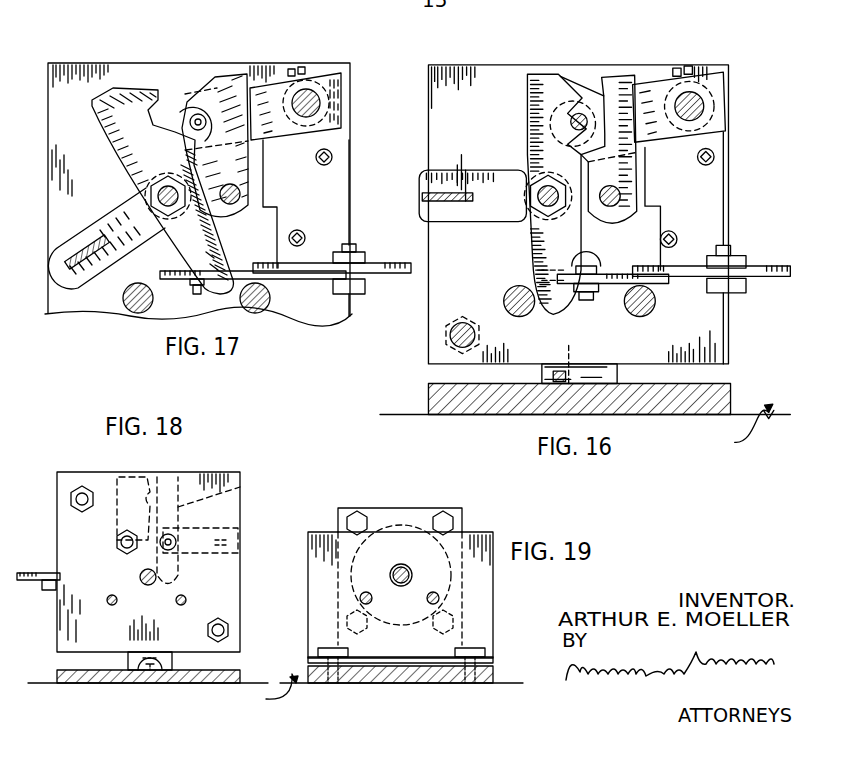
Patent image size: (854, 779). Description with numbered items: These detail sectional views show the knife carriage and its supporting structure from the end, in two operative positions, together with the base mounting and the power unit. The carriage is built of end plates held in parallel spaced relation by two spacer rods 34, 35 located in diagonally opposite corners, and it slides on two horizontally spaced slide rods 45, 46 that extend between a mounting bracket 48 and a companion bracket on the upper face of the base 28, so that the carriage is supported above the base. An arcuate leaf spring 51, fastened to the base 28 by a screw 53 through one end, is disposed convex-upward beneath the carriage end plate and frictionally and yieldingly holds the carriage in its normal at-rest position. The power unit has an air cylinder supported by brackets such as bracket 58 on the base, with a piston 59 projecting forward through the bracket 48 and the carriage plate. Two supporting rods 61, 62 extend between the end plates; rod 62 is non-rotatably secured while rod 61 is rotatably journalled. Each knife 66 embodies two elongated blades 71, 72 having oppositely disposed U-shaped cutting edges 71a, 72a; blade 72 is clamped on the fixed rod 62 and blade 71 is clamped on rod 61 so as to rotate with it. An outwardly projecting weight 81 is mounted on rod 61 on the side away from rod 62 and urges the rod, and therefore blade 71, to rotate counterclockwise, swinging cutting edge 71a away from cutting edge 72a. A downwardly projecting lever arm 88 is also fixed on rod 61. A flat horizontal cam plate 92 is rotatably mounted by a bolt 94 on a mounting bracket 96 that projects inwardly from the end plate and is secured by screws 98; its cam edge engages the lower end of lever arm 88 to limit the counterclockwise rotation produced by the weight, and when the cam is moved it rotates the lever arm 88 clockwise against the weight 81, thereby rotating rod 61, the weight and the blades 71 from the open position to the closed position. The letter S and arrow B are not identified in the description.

In FIG. 17, the blade 71 is at (125, 88).
In FIG. 16, the blade 71 is at (537, 70).
In FIG. 18, the blade 71 is at (212, 530).
In FIG. 17, the cutting edge 71a is at (170, 108).
In FIG. 17, the blade 72 is at (216, 88).
In FIG. 16, the blade 72 is at (583, 80).
In FIG. 18, the blade 72 is at (118, 487).
In FIG. 17, the cutting edge 72a is at (185, 105).
In FIG. 16, the cutting edge 72a is at (572, 123).
In FIG. 17, the knife 66 is at (241, 74).
In FIG. 16, the knife 66 is at (606, 70).
In FIG. 18, the knife 66 is at (182, 492).
In FIG. 17, the switch S is at (277, 85).
In FIG. 16, the switch S is at (636, 80).
In FIG. 17, the spacer rod 34 is at (320, 101).
In FIG. 16, the spacer rod 34 is at (695, 100).
In FIG. 18, the spacer rod 34 is at (70, 500).
In FIG. 17, the screw 98 is at (332, 153).
In FIG. 16, the screw 98 is at (704, 150).
In FIG. 17, the weight 81 is at (66, 242).
In FIG. 16, the weight 81 is at (418, 171).
In FIG. 18, the weight 81 is at (246, 542).
In FIG. 17, the supporting rod 61 is at (157, 196).
In FIG. 16, the supporting rod 61 is at (525, 190).
In FIG. 18, the supporting rod 61 is at (177, 540).
In FIG. 17, the supporting rod 62 is at (241, 195).
In FIG. 16, the supporting rod 62 is at (613, 190).
In FIG. 18, the supporting rod 62 is at (115, 542).
In FIG. 17, the cam plate 92 is at (245, 271).
In FIG. 16, the cam plate 92 is at (612, 266).
In FIG. 17, the mounting bracket 96 is at (387, 263).
In FIG. 16, the mounting bracket 96 is at (762, 258).
In FIG. 18, the mounting bracket 96 is at (37, 573).
In FIG. 17, the lever arm 88 is at (192, 250).
In FIG. 16, the lever arm 88 is at (528, 248).
In FIG. 17, the bolt 94 is at (363, 292).
In FIG. 16, the bolt 94 is at (735, 284).
In FIG. 18, the bolt 94 is at (46, 592).
In FIG. 17, the slide rod 45 is at (122, 301).
In FIG. 16, the slide rod 45 is at (510, 306).
In FIG. 18, the slide rod 45 is at (187, 600).
In FIG. 19, the slide rod 45 is at (359, 599).
In FIG. 17, the slide rod 46 is at (270, 302).
In FIG. 16, the slide rod 46 is at (625, 306).
In FIG. 18, the slide rod 46 is at (110, 606).
In FIG. 19, the slide rod 46 is at (430, 598).
In FIG. 16, the spacer rod 35 is at (450, 327).
In FIG. 18, the spacer rod 35 is at (228, 630).
In FIG. 16, the screw 53 is at (568, 352).
In FIG. 18, the screw 53 is at (142, 675).
In FIG. 16, the leaf spring 51 is at (595, 368).
In FIG. 18, the leaf spring 51 is at (160, 672).
In FIG. 16, the base 28 is at (710, 372).
In FIG. 19, the bracket 58 is at (402, 508).
In FIG. 18, the piston 59 is at (140, 577).
In FIG. 19, the piston 59 is at (390, 577).
In FIG. 19, the mounting bracket 48 is at (490, 626).
In FIG. 16, the direction arrow B is at (749, 428).
In FIG. 18, the direction arrow B is at (273, 693).